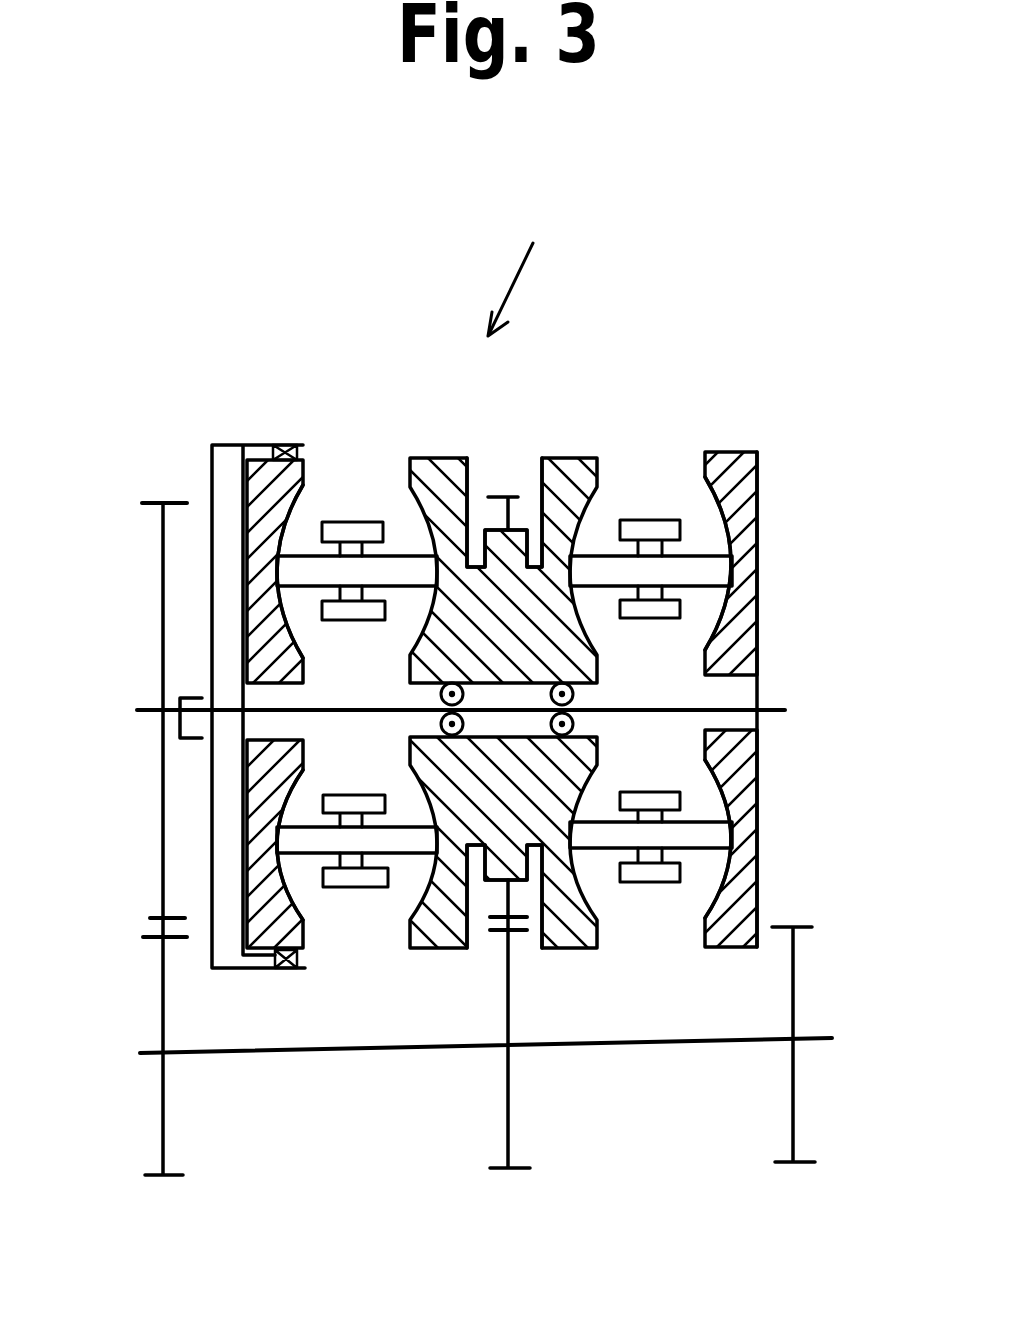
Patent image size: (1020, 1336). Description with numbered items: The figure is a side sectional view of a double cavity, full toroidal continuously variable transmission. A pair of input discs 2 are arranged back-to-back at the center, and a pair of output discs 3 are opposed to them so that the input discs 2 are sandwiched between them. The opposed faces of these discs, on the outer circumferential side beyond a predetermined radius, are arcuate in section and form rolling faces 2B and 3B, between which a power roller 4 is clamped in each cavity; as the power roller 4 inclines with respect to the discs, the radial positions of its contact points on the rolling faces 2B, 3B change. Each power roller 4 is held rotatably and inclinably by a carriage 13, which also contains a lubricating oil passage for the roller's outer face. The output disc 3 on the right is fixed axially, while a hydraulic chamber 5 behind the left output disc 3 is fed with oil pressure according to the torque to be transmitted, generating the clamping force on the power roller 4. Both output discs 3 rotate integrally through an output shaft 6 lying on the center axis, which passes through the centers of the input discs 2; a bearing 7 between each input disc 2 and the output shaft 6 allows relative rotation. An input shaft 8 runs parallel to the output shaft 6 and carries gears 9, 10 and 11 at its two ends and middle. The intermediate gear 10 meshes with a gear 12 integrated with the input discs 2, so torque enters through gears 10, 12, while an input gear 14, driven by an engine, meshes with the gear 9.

The input disc 2 is at (428, 476).
The rolling face 2B is at (585, 520).
The output disc 3 is at (266, 470).
The rolling face 3B is at (738, 608).
The power roller 4 is at (306, 580).
The hydraulic chamber 5 is at (212, 580).
The output shaft 6 is at (626, 708).
The bearing 7 is at (440, 722).
The input shaft 8 is at (617, 1043).
The gear 9 is at (163, 1175).
The gear 10 is at (507, 1172).
The gear 11 is at (795, 1165).
The gear 12 is at (515, 907).
The carriage 13 is at (357, 530).
The input gear 14 is at (163, 500).